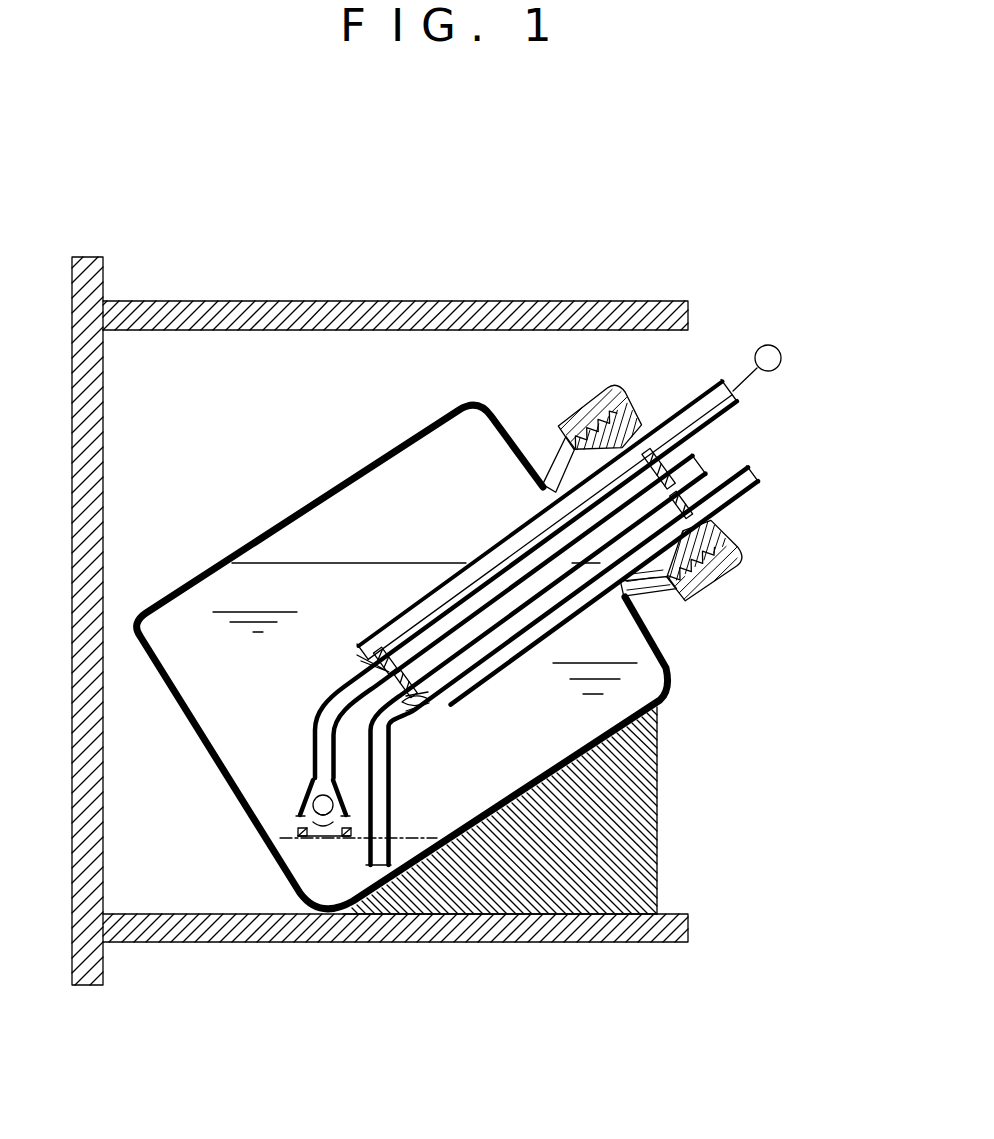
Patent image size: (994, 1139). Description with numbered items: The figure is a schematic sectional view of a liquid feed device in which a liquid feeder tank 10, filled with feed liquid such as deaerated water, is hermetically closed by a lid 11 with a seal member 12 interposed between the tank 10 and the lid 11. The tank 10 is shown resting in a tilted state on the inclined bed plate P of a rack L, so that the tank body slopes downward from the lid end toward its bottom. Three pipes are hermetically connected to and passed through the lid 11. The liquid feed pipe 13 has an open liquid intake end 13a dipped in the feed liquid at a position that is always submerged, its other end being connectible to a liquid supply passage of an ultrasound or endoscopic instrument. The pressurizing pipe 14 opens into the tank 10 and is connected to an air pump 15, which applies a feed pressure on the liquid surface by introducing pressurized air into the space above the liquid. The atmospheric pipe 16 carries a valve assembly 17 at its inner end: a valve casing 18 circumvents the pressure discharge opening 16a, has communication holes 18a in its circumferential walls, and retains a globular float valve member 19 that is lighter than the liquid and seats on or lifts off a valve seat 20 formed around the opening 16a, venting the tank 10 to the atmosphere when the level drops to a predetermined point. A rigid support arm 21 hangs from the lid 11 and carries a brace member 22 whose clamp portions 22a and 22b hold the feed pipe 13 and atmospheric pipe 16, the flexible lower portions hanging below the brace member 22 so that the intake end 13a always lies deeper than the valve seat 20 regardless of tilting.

The liquid feeder tank 10 is at (325, 490).
The lid 11 is at (736, 578).
The seal member 12 is at (720, 549).
The liquid feed pipe 13 is at (754, 494).
The open liquid intake end 13a is at (384, 869).
The pressurizing pipe 14 is at (683, 413).
The air pump 15 is at (778, 346).
The atmospheric pipe 16 is at (702, 456).
The pressure discharge opening 16a is at (301, 812).
The valve assembly 17 is at (304, 836).
The valve casing 18 is at (344, 838).
The communication holes 18a is at (347, 836).
The globular float valve member 19 is at (333, 800).
The valve seat 20 is at (312, 840).
The support arm 21 is at (526, 524).
The brace member 22 is at (422, 710).
The clamp portion 22a is at (430, 694).
The clamp portion 22b is at (358, 656).
The rack L is at (552, 301).
The inclined bed plate P is at (637, 833).